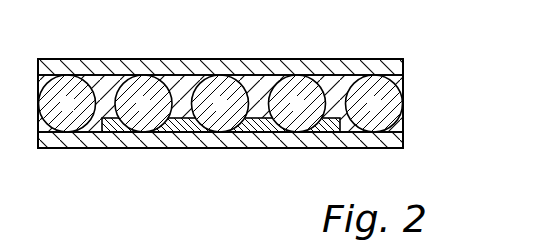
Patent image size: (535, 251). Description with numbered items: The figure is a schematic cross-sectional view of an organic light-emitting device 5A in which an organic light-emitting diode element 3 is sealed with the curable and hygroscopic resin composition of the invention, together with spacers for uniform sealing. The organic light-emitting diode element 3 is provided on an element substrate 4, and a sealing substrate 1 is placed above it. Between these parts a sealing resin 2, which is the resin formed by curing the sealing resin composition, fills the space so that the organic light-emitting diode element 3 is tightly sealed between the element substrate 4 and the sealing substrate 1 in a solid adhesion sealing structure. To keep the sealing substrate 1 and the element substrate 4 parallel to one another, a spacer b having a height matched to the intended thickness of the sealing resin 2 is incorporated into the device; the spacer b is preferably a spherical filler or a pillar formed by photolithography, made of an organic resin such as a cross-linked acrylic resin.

The organic light-emitting device 5A is at (382, 58).
The sealing substrate 1 is at (396, 69).
The sealing resin 2 is at (397, 85).
The organic light-emitting diode element 3 is at (322, 133).
The element substrate 4 is at (396, 144).
The spacer b is at (220, 104).